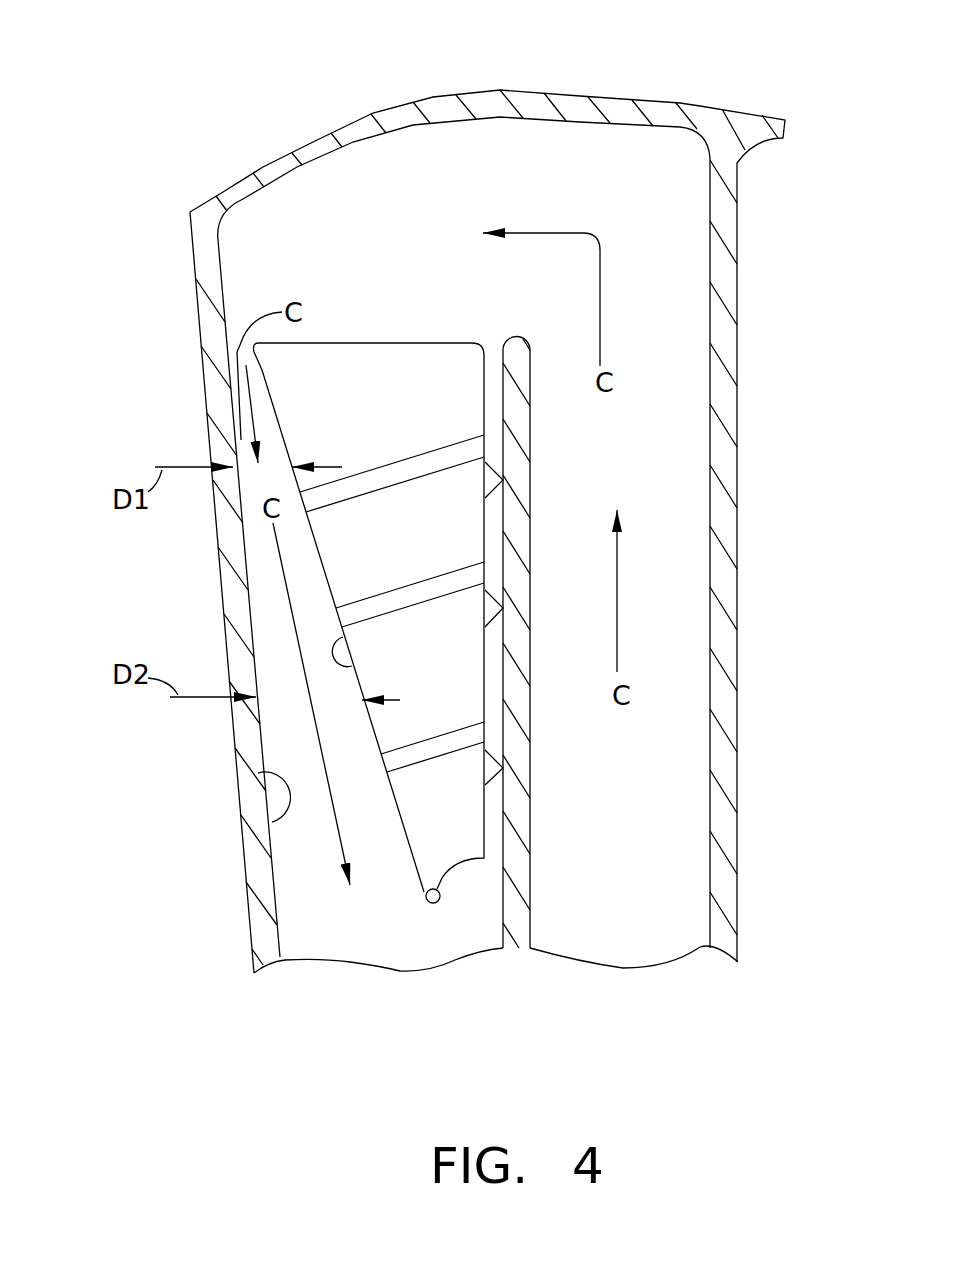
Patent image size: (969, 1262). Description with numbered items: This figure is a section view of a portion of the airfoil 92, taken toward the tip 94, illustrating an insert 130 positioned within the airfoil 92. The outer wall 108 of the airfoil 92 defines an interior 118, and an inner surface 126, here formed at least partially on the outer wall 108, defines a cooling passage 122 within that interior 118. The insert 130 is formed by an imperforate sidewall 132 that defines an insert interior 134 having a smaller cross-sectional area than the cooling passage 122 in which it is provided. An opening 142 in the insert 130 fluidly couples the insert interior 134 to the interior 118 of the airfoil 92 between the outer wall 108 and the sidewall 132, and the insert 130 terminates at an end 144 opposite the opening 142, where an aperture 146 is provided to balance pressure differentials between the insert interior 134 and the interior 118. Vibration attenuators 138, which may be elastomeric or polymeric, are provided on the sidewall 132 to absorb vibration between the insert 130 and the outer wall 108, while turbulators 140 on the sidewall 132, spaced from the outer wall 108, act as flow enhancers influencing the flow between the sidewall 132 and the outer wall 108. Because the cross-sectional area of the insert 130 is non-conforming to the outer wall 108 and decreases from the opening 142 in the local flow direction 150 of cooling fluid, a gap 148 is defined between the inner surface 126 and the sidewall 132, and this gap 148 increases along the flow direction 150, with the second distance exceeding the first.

The airfoil 92 is at (222, 34).
The tip 94 is at (458, 94).
The outer wall 108 is at (205, 378).
The interior 118 is at (483, 187).
The cooling passage 122 is at (676, 775).
The inner surface 126 is at (257, 773).
The insert 130 is at (420, 339).
The sidewall 132 is at (350, 669).
The insert interior 134 is at (357, 386).
The vibration attenuator 138 is at (487, 462).
The turbulator 140 is at (443, 470).
The opening 142 is at (328, 344).
The end 144 is at (428, 903).
The aperture 146 is at (478, 862).
The gap 148 is at (272, 614).
The flow direction 150 is at (244, 400).